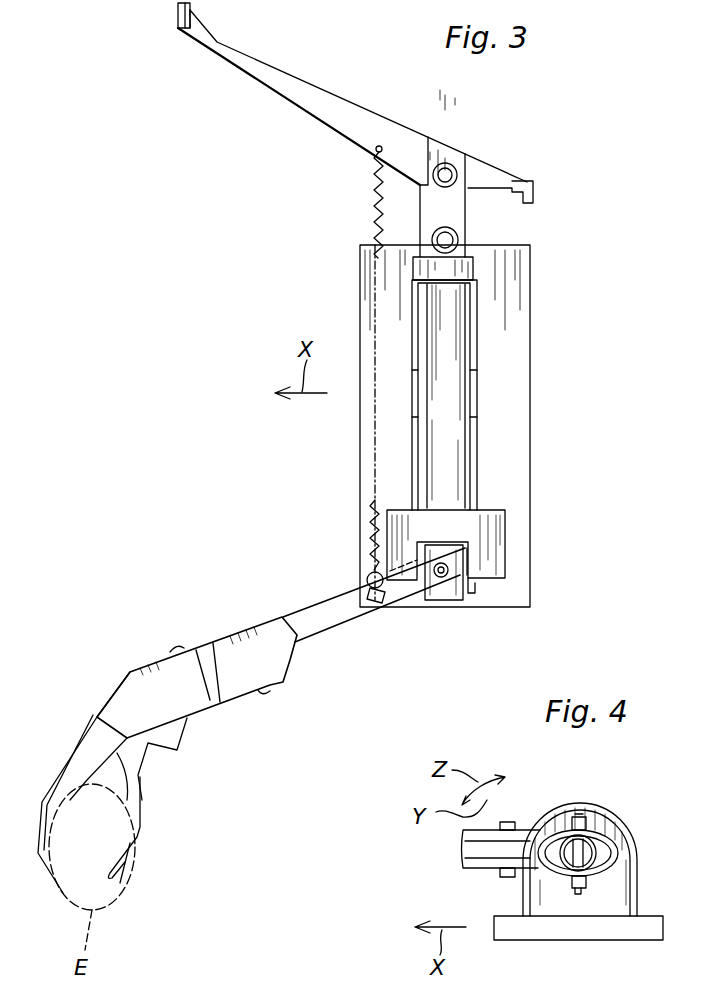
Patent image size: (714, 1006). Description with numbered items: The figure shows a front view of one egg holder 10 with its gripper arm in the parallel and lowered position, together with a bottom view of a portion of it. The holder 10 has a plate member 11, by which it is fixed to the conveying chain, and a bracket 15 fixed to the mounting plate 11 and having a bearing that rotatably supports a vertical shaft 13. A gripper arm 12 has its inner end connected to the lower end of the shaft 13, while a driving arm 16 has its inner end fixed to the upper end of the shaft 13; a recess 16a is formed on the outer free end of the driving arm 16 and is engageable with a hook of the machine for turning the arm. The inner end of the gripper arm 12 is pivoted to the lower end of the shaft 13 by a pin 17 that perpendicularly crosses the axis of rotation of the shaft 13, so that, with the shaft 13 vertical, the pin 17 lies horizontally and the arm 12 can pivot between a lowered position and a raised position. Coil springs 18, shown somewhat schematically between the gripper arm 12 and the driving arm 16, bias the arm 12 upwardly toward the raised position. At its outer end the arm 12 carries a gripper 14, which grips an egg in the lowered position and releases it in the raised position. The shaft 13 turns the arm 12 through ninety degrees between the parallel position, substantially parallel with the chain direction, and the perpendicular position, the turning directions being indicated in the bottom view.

In FIG. 3, the holder 10 is at (590, 382).
In FIG. 3, the plate member 11 is at (512, 410).
In FIG. 4, the plate member 11 is at (625, 932).
In FIG. 3, the gripper arm 12 is at (322, 607).
In FIG. 4, the gripper arm 12 is at (485, 866).
In FIG. 3, the shaft 13 is at (450, 355).
In FIG. 4, the shaft 13 is at (560, 870).
In FIG. 3, the gripper 14 is at (108, 680).
In FIG. 3, the bracket 15 is at (475, 315).
In FIG. 3, the driving arm 16 is at (318, 92).
In FIG. 3, the recess 16a is at (178, 22).
In FIG. 3, the pin 17 is at (441, 580).
In FIG. 4, the pin 17 is at (580, 892).
In FIG. 3, the coil springs 18 is at (372, 190).